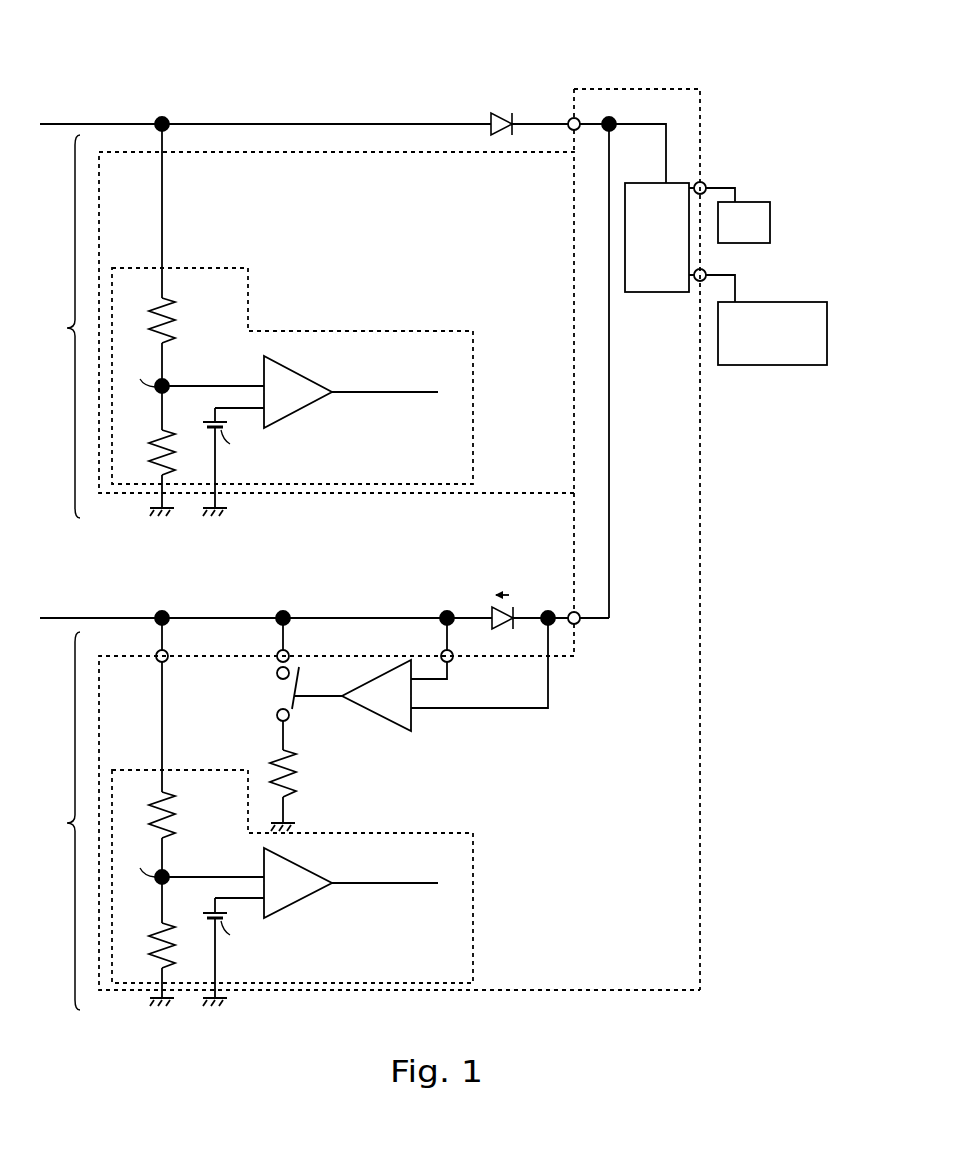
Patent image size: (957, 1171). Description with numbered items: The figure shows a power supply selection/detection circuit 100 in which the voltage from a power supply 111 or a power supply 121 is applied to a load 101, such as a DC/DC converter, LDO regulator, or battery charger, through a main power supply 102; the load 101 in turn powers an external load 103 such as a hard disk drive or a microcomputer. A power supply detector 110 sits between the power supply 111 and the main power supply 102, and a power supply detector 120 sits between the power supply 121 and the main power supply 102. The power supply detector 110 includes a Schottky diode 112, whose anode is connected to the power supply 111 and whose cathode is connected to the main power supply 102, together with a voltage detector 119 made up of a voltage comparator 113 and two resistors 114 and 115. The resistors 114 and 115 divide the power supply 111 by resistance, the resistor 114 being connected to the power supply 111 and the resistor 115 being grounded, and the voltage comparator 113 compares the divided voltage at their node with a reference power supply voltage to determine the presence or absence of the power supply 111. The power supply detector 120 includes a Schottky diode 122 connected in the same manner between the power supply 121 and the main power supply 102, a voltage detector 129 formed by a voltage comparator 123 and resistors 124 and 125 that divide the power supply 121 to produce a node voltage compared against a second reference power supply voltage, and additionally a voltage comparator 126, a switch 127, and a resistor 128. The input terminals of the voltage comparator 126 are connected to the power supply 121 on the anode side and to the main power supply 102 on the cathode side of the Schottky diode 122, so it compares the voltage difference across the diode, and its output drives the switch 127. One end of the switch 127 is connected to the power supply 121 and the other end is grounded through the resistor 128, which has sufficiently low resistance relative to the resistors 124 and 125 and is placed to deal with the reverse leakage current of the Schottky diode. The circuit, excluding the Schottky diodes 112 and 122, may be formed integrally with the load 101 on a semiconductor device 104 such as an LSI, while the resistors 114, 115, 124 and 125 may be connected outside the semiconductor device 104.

The power supply selection/detection circuit 100 is at (704, 62).
The load 101 is at (645, 293).
The main power supply 102 is at (634, 122).
The external load 103 is at (745, 244).
The semiconductor device 104 is at (700, 910).
The power supply detector 110 is at (305, 326).
The power supply 111 is at (75, 121).
The Schottky diode 112 is at (489, 121).
The voltage comparator 113 is at (285, 418).
The resistor 114 is at (152, 323).
The resistor 115 is at (152, 455).
The voltage detector 119 is at (474, 418).
The power supply detector 120 is at (368, 821).
The power supply 121 is at (58, 615).
The Schottky diode 122 is at (490, 615).
The voltage comparator 123 is at (285, 908).
The resistor 124 is at (152, 818).
The resistor 125 is at (152, 946).
The voltage comparator 126 is at (400, 732).
The switch 127 is at (290, 712).
The resistor 128 is at (272, 763).
The voltage detector 129 is at (473, 918).